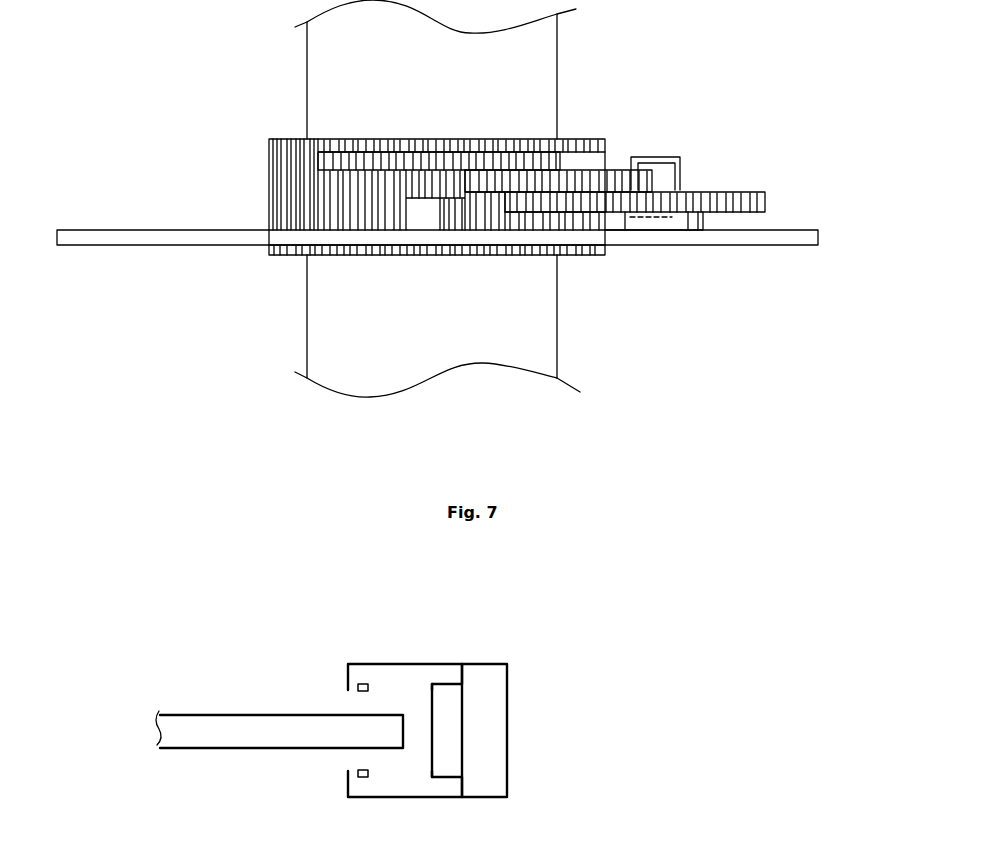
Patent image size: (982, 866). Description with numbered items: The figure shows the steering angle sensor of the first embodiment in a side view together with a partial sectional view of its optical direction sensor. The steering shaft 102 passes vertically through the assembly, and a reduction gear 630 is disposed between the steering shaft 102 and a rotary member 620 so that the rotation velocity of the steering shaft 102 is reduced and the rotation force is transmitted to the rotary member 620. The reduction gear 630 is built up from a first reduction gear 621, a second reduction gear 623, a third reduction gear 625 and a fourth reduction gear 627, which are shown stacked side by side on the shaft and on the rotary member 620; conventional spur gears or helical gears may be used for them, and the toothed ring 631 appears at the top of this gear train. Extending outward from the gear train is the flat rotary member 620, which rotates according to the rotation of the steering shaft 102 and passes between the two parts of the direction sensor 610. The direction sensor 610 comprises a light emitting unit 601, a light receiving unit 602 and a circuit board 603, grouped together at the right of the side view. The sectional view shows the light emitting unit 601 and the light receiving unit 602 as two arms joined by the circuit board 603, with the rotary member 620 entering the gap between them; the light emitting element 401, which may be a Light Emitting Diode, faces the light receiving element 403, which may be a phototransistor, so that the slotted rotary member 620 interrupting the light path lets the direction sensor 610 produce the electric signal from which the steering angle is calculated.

In FIG. 6B, the steering shaft 102 is at (315, 50).
In FIG. 6B, the ring gear 631 is at (405, 139).
In FIG. 6B, the reduction gear 630 is at (439, 233).
In FIG. 6B, the first reduction gear 621 is at (362, 163).
In FIG. 6B, the second reduction gear 623 is at (410, 186).
In FIG. 6B, the third reduction gear 625 is at (480, 185).
In FIG. 6B, the fourth reduction gear 627 is at (547, 243).
In FIG. 6B, the direction sensor 610 is at (674, 188).
In FIG. 6B, the light emitting unit 601 is at (672, 178).
In FIG. 7, the light emitting unit 601 is at (398, 664).
In FIG. 6B, the light receiving unit 602 is at (678, 223).
In FIG. 7, the light receiving unit 602 is at (394, 797).
In FIG. 6B, the circuit board 603 is at (680, 158).
In FIG. 7, the circuit board 603 is at (507, 750).
In FIG. 7, the light emitting element 401 is at (358, 688).
In FIG. 7, the light receiving element 403 is at (358, 773).
In FIG. 7, the rotary member 620 is at (200, 748).